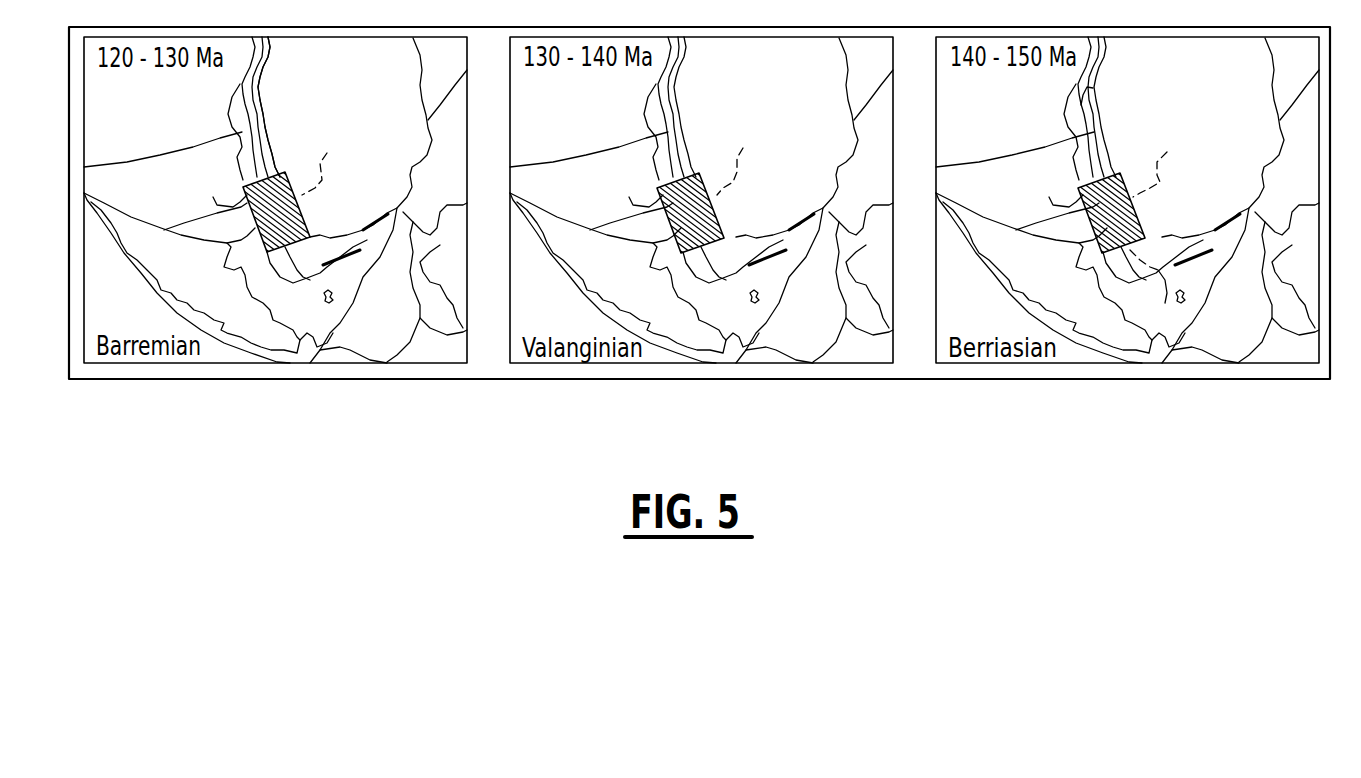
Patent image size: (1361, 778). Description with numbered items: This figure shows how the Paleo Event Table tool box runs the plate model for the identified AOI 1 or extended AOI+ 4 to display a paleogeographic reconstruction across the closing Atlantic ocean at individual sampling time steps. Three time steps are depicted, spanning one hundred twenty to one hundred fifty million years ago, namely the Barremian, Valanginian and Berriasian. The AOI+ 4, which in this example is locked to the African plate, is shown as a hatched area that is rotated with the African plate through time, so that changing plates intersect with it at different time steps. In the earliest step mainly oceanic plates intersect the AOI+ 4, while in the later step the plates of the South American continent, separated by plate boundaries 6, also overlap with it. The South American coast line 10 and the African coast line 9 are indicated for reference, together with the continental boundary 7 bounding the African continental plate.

The AOI 1 is at (788, 137).
The AOI+ 4 is at (748, 164).
The plate boundaries 6 is at (265, 160).
The continental boundary 7 is at (1152, 290).
The African coast line 9 is at (1115, 88).
The South American coast line 10 is at (885, 165).